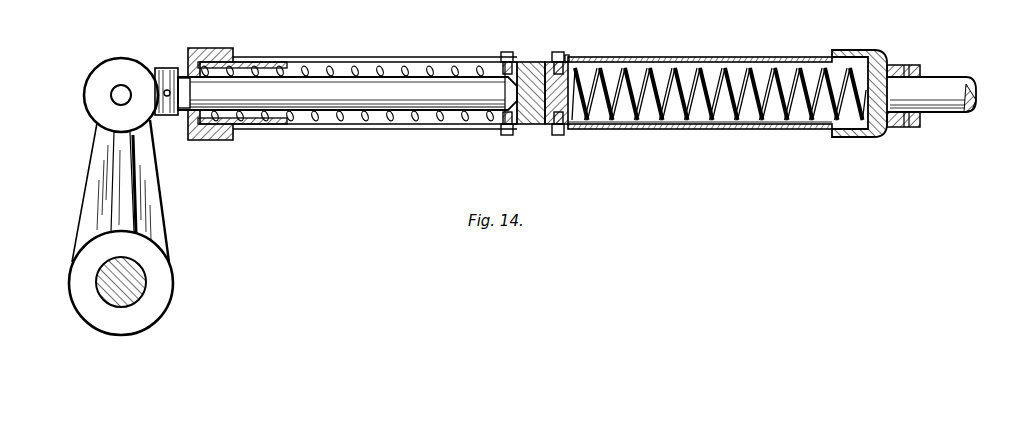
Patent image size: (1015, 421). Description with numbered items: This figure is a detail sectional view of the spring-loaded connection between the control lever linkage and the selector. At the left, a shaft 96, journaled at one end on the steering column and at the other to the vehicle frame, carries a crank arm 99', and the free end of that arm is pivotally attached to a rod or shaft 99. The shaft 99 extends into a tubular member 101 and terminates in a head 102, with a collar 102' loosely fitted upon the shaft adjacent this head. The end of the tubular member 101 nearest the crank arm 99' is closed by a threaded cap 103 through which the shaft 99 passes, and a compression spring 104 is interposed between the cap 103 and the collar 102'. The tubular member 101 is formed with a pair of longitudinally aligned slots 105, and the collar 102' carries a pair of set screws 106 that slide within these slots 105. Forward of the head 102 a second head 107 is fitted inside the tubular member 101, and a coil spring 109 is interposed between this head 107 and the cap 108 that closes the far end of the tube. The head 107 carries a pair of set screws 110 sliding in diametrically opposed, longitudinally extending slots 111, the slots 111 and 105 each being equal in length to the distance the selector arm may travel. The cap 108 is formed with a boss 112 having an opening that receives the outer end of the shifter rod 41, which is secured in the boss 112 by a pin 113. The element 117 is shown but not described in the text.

The shifter rod 41 is at (957, 103).
The shaft 96 is at (134, 280).
The rod or shaft 99 is at (347, 131).
The crank arm 99' is at (117, 196).
The tubular member 101 is at (268, 125).
The head 102 is at (544, 114).
The collar 102' is at (464, 117).
The cap 103 is at (282, 33).
The compression spring 104 is at (418, 44).
The slots 105 is at (485, 44).
The set screws 106 is at (570, 47).
The second head 107 is at (566, 88).
The cap 108 is at (928, 40).
The coil spring 109 is at (812, 37).
The set screws 110 is at (632, 44).
The slots 111 is at (748, 52).
The boss 112 is at (975, 57).
The pin 113 is at (1000, 72).
The liner 117 is at (738, 162).